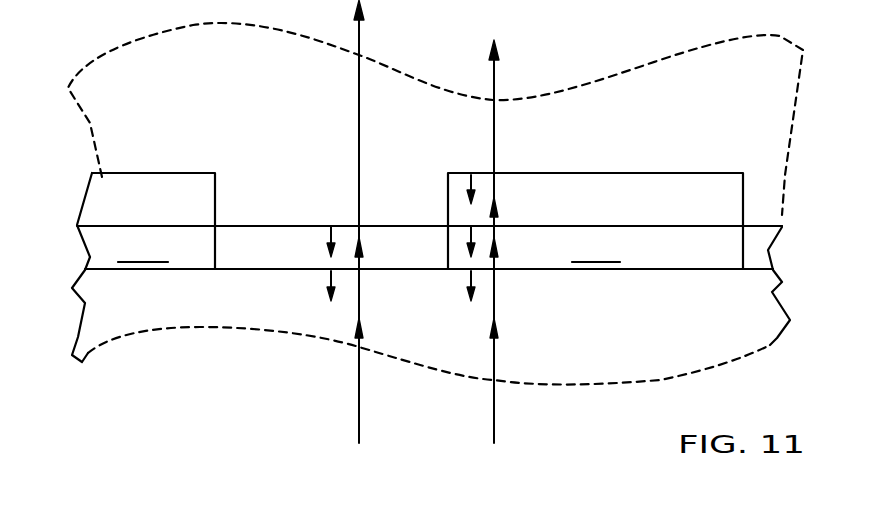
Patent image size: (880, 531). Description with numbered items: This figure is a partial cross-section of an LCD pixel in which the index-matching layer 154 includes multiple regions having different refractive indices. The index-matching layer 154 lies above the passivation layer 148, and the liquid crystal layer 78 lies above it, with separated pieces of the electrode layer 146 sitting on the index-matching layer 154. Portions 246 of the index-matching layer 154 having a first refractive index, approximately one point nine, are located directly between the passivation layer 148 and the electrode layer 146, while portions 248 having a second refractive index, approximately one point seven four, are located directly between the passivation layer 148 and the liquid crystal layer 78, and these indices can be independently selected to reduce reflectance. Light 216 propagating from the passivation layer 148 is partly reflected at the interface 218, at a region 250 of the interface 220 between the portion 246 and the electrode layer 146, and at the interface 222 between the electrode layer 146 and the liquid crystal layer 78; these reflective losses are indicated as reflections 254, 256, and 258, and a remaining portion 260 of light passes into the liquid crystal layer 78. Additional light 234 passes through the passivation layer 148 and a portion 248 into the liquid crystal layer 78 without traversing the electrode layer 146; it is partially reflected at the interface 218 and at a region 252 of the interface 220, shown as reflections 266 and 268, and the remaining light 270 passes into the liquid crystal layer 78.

The liquid crystal layer 78 is at (108, 105).
The interface 222 is at (155, 172).
The electrode layer 146 is at (94, 198).
The index-matching layer 154 is at (74, 253).
The passivation layer 148 is at (85, 305).
The region of the interface 250 is at (118, 225).
The portions of the index-matching layer 246 is at (369, 247).
The region of the interface 252 is at (238, 225).
The portions of the index-matching layer 248 is at (230, 258).
The reflective loss 268 is at (325, 236).
The reflective loss 266 is at (325, 280).
The reflective loss 258 is at (465, 184).
The reflective loss 256 is at (465, 236).
The reflective loss 254 is at (465, 280).
The light 234 is at (356, 414).
The remaining light 270 is at (361, 32).
The light 216 is at (497, 415).
The remaining portion of light 260 is at (496, 76).
The interface 220 is at (792, 230).
The interface 218 is at (762, 272).